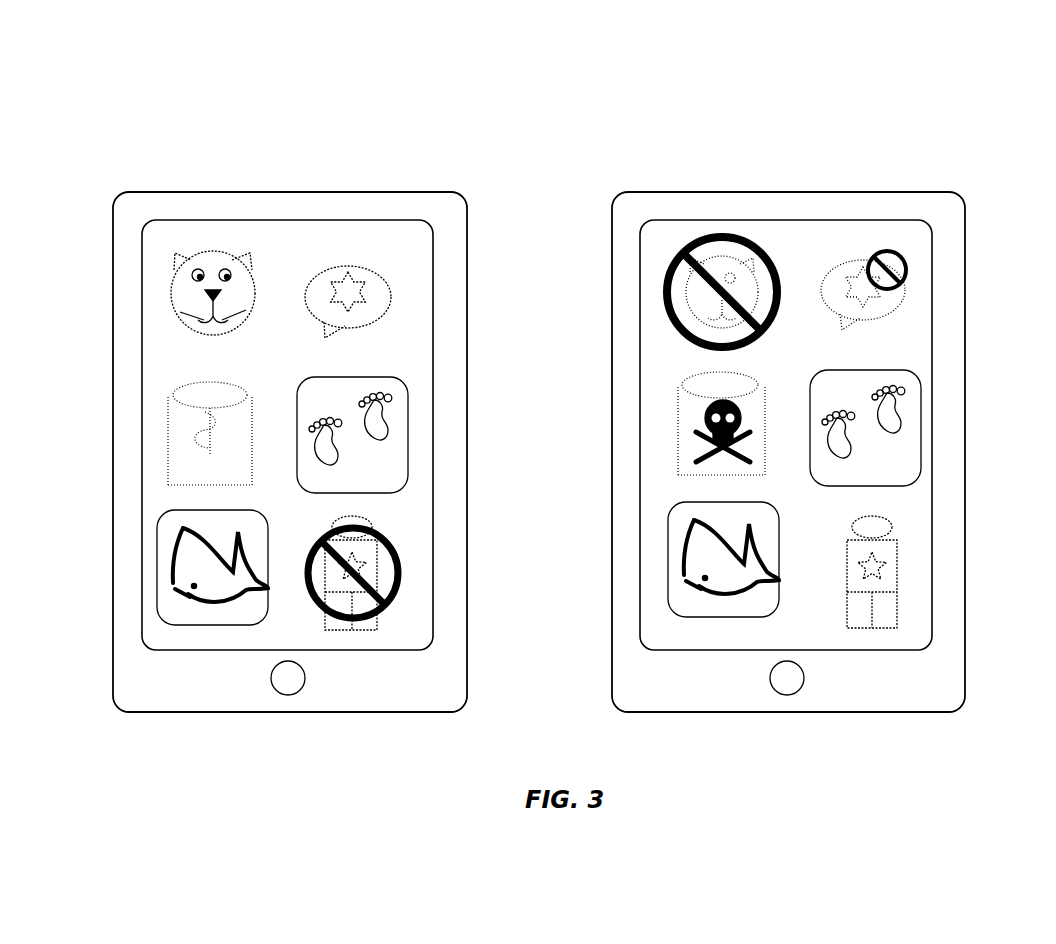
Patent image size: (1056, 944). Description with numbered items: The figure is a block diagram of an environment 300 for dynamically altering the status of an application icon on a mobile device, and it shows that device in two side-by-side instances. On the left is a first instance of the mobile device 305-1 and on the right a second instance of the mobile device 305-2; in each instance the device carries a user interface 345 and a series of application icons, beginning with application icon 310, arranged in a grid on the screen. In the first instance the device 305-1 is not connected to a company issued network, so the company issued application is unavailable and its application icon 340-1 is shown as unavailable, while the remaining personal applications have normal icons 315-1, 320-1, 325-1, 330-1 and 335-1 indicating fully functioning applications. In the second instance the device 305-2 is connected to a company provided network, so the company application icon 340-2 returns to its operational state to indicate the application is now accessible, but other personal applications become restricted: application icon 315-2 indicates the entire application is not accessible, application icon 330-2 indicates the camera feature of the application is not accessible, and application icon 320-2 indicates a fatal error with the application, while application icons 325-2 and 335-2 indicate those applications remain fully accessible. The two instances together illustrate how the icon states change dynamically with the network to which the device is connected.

The environment 300 is at (930, 118).
The first instance of the mobile device 305-1 is at (150, 192).
The second instance of the mobile device 305-2 is at (649, 192).
The application icon 310 is at (393, 226).
The application icon 315-1 is at (171, 296).
The application icon 315-2 is at (680, 280).
The application icon 320-1 is at (180, 418).
The application icon 320-2 is at (690, 398).
The application icon 325-1 is at (168, 521).
The application icon 325-2 is at (682, 522).
The application icon 330-1 is at (370, 303).
The application icon 330-2 is at (900, 296).
The application icon 335-1 is at (390, 462).
The application icon 335-2 is at (910, 378).
The company application icon 340-1 is at (393, 610).
The company application icon 340-2 is at (908, 603).
The user interface 345 is at (82, 590).